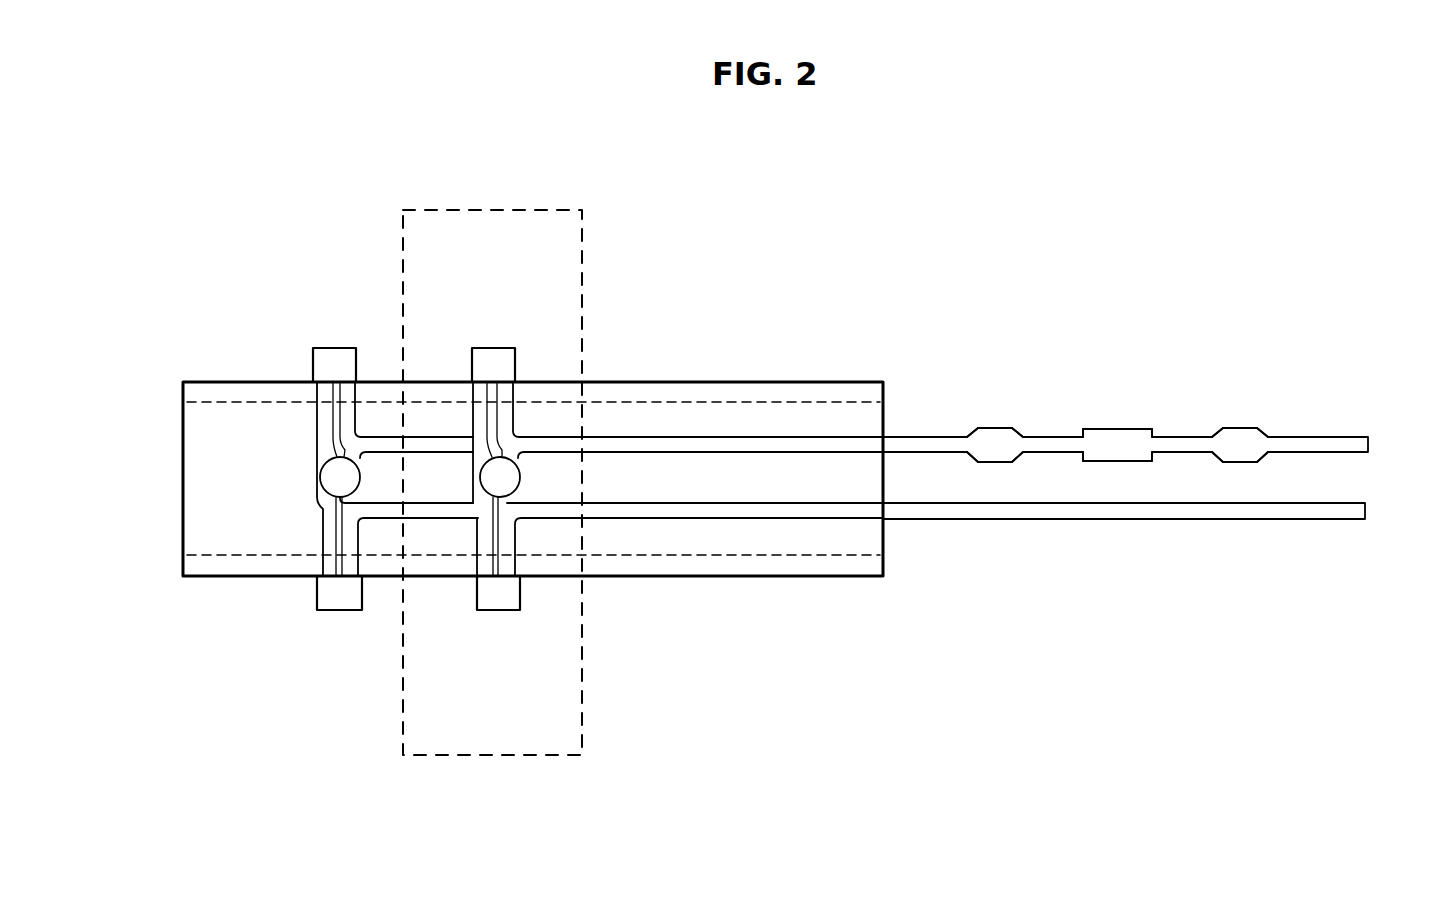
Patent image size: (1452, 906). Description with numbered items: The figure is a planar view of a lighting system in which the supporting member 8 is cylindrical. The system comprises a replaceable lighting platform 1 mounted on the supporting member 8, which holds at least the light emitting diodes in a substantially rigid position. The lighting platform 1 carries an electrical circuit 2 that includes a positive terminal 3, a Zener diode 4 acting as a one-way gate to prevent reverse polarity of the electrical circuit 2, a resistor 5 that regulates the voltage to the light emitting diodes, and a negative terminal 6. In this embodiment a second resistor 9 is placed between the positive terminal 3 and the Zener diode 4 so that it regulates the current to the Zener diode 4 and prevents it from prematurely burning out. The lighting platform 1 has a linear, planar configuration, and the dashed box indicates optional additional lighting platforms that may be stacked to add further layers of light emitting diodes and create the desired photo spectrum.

The lighting platform 1 is at (898, 522).
The electrical circuit 2 is at (640, 445).
The positive terminal 3 is at (1362, 447).
The Zener diode 4 is at (1119, 445).
The resistor 5 is at (996, 445).
The negative terminal 6 is at (1358, 512).
The supporting member 8 is at (197, 393).
The second resistor 9 is at (1238, 445).